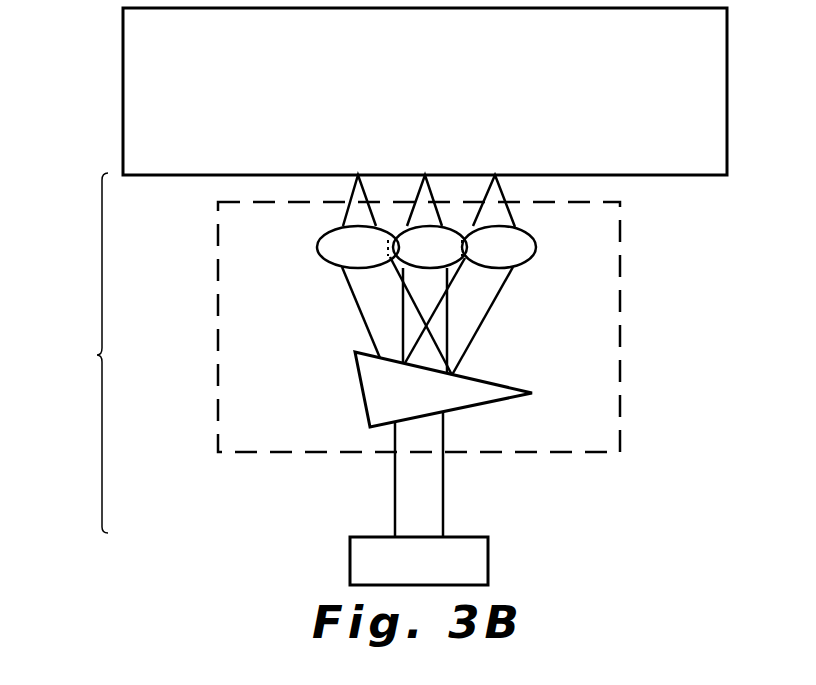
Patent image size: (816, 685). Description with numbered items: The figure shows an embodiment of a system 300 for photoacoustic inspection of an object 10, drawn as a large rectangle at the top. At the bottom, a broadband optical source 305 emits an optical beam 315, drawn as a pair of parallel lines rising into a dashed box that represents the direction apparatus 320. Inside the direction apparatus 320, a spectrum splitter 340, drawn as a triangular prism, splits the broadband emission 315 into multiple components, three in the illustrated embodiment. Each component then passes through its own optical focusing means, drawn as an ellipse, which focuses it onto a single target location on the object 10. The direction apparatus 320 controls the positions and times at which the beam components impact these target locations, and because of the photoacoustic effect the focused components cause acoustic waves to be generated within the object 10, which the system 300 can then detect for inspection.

The object 10 is at (639, 110).
The system for photoacoustic inspection 300 is at (76, 353).
The broadband optical source 305 is at (385, 563).
The optical beam 315 is at (425, 480).
The direction apparatus 320 is at (589, 428).
The spectrum splitter 340 is at (385, 382).